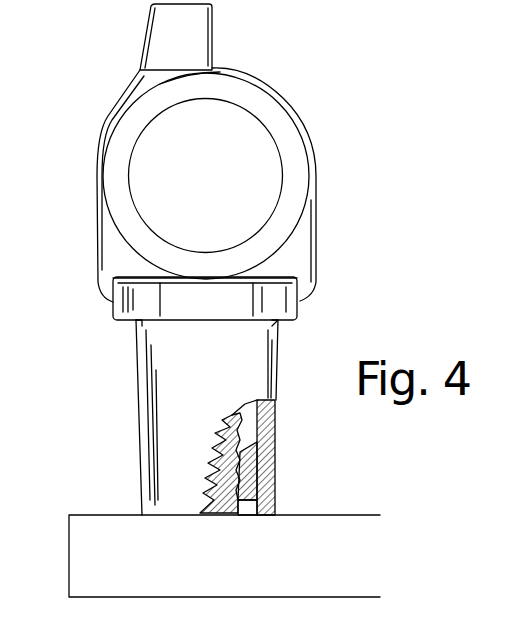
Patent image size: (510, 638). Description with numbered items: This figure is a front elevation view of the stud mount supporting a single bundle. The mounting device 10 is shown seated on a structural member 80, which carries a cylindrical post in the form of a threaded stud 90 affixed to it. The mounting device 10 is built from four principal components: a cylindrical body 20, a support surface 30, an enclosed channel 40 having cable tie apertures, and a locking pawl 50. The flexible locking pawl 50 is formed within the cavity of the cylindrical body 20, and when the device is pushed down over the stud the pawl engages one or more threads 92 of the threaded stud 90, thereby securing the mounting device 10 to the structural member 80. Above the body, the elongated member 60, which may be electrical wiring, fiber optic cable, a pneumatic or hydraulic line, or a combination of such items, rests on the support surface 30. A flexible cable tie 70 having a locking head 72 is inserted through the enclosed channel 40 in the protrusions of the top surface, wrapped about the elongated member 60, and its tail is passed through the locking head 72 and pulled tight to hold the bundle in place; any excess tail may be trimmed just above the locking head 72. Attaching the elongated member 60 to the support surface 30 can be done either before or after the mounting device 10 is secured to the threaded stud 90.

The mounting device 10 is at (113, 338).
The cylindrical body 20 is at (137, 402).
The support surface 30 is at (135, 276).
The enclosed channel 40 is at (110, 300).
The locking pawl 50 is at (268, 436).
The elongated member 60 is at (290, 152).
The flexible cable tie 70 is at (318, 233).
The locking head 72 is at (160, 37).
The structural member 80 is at (78, 513).
The threaded stud 90 is at (220, 506).
The threads 92 is at (258, 517).